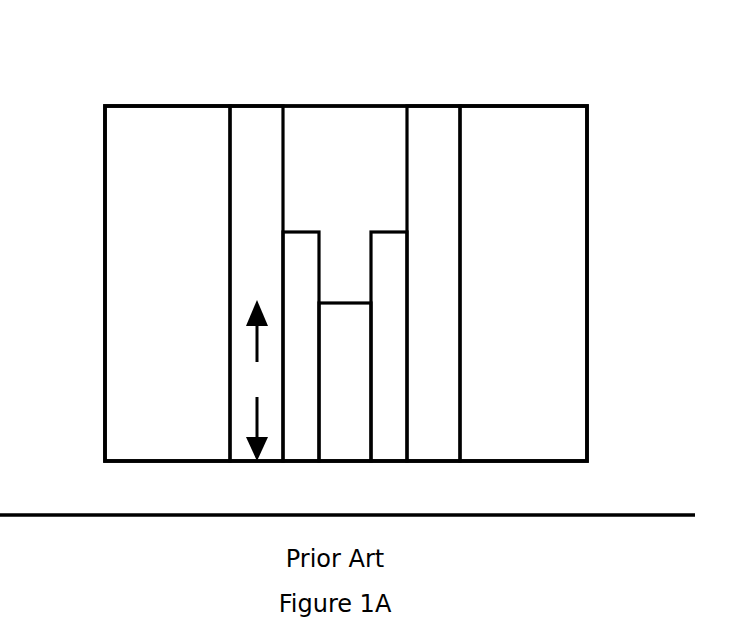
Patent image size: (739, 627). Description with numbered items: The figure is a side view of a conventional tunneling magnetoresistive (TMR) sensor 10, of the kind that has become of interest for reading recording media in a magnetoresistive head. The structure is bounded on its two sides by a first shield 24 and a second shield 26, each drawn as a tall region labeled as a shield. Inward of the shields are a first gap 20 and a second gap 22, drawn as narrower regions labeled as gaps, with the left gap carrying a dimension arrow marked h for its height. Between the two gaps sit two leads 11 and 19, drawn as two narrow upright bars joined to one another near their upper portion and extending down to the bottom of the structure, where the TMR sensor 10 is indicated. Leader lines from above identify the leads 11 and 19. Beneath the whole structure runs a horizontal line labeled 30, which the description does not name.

The TMR sensor 10 is at (345, 462).
The lead 11 is at (390, 232).
The lead 19 is at (300, 232).
The first gap 20 is at (247, 462).
The second gap 22 is at (440, 462).
The first shield 24 is at (105, 195).
The second shield 26 is at (587, 162).
The air bearing surface 30 is at (585, 515).